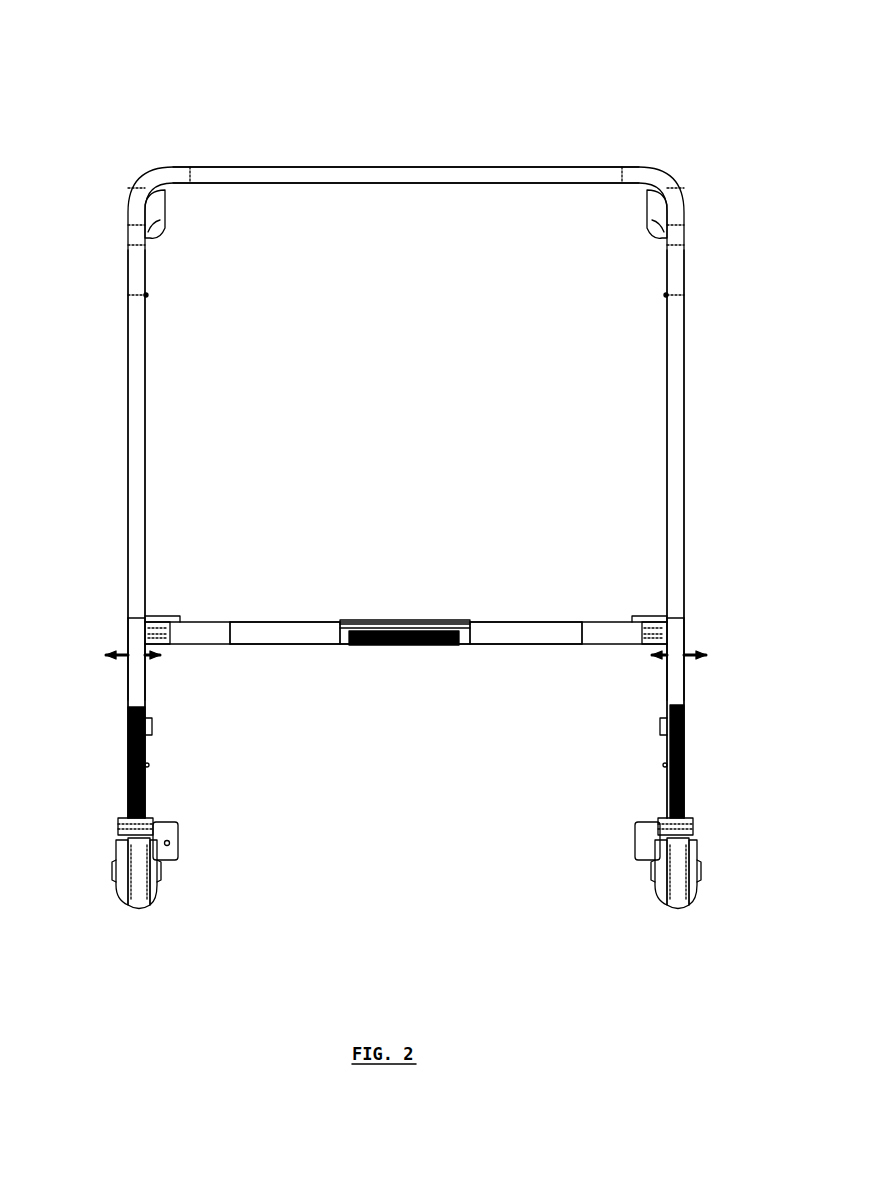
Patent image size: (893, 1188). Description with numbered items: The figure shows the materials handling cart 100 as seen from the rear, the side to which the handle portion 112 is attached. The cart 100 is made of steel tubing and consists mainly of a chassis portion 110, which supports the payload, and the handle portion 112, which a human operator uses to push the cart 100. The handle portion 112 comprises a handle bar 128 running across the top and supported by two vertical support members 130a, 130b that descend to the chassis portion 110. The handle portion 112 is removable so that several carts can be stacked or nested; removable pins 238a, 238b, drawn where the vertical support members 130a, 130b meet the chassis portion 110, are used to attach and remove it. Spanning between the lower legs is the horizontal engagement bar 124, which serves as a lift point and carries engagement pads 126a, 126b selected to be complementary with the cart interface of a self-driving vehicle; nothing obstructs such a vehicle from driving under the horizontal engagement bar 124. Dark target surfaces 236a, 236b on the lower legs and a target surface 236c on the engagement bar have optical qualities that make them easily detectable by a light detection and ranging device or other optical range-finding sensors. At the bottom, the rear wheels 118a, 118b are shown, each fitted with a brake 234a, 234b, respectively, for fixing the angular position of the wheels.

The materials handling cart 100 is at (480, 73).
The handle portion 112 is at (110, 536).
The handle bar 128 is at (312, 167).
The vertical support member 130a is at (667, 383).
The vertical support member 130b is at (145, 383).
The chassis portion 110 is at (110, 685).
The horizontal engagement bar 124 is at (612, 633).
The engagement pad 126a is at (545, 632).
The engagement pad 126b is at (312, 632).
The target surface 236c is at (420, 632).
The removable pin 238a is at (703, 650).
The removable pin 238b is at (118, 648).
The target surface 236a is at (670, 803).
The target surface 236b is at (145, 803).
The brake 234a is at (643, 842).
The brake 234b is at (170, 842).
The first rear wheel 118a is at (674, 885).
The second rear wheel 118b is at (135, 885).